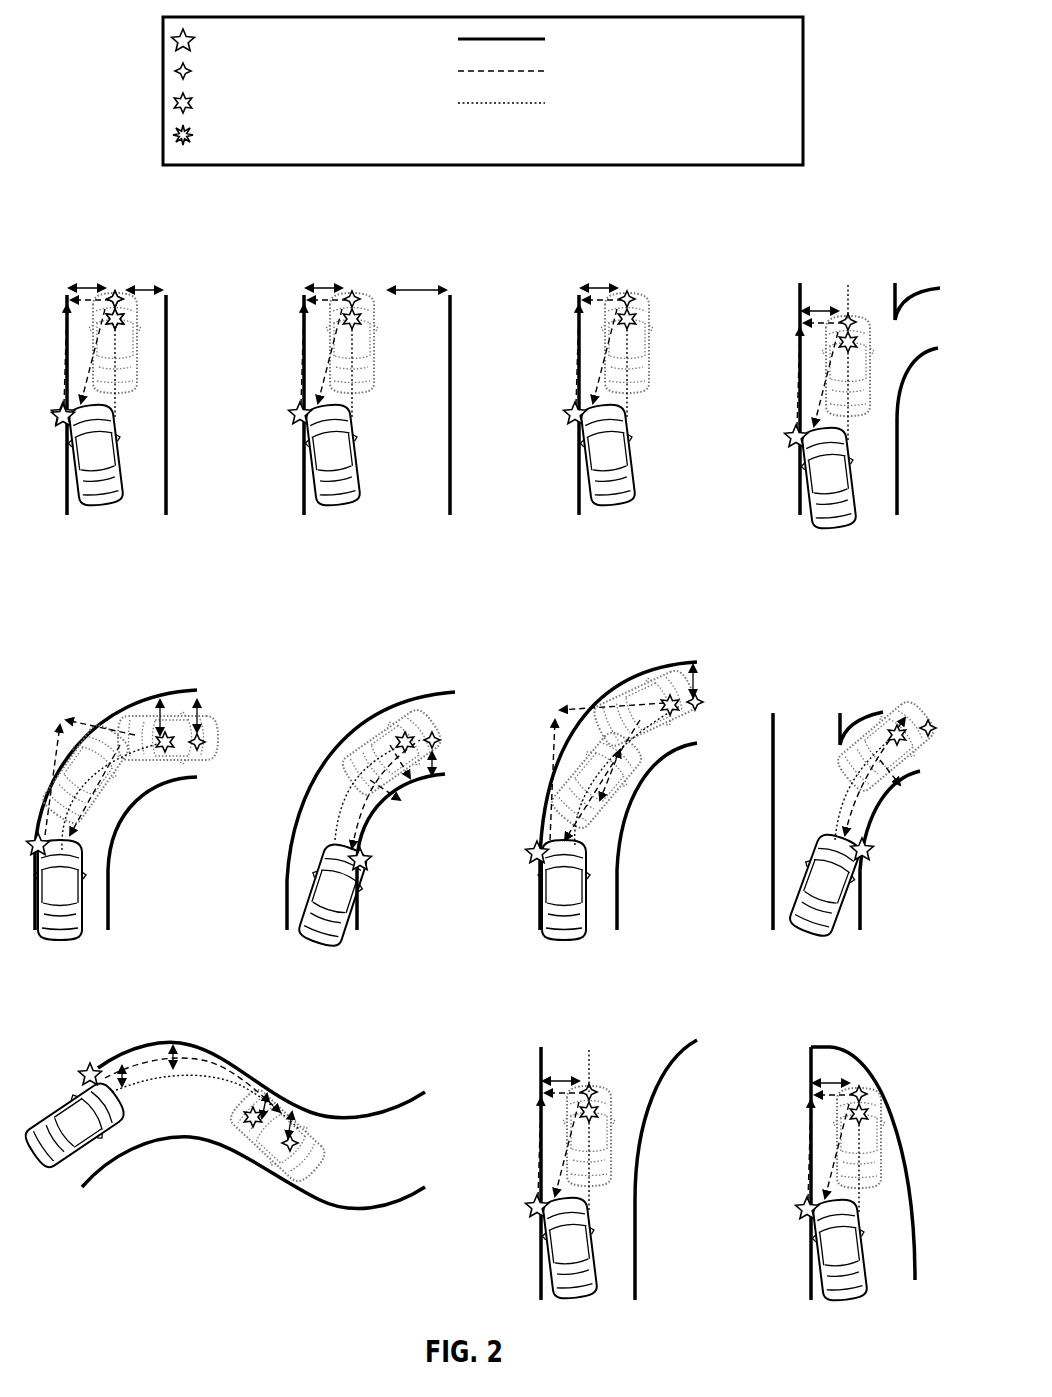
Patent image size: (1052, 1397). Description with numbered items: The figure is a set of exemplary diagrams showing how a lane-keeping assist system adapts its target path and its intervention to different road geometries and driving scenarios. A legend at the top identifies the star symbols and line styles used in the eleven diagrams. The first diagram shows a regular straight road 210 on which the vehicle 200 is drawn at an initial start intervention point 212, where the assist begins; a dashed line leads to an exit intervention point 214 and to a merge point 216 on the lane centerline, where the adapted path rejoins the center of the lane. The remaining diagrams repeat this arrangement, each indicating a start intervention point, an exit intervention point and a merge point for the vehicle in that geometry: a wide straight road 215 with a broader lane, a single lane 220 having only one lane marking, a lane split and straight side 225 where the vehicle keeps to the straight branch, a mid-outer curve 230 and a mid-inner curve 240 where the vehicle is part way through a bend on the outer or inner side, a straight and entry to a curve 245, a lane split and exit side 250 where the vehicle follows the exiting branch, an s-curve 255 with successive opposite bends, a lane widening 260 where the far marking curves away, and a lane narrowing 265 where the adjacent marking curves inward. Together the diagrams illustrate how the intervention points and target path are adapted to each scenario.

The vehicle 200 is at (97, 503).
The regular straight road 210 is at (124, 397).
The initial start intervention point 212 is at (58, 410).
The exit intervention point 214 is at (123, 319).
The merge point 216 is at (123, 297).
The wide straight road 215 is at (360, 243).
The single lane 220 is at (612, 243).
The lane split and straight side 225 is at (860, 243).
The mid-outer curve 230 is at (117, 623).
The mid-inner curve 240 is at (377, 623).
The straight and entry to a curve 245 is at (604, 623).
The lane split and exit side 250 is at (852, 623).
The s-curve 255 is at (234, 1005).
The lane widening 260 is at (615, 1005).
The lane narrowing 265 is at (835, 1005).